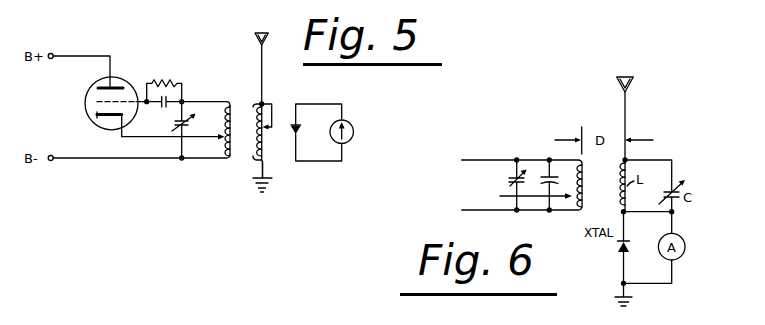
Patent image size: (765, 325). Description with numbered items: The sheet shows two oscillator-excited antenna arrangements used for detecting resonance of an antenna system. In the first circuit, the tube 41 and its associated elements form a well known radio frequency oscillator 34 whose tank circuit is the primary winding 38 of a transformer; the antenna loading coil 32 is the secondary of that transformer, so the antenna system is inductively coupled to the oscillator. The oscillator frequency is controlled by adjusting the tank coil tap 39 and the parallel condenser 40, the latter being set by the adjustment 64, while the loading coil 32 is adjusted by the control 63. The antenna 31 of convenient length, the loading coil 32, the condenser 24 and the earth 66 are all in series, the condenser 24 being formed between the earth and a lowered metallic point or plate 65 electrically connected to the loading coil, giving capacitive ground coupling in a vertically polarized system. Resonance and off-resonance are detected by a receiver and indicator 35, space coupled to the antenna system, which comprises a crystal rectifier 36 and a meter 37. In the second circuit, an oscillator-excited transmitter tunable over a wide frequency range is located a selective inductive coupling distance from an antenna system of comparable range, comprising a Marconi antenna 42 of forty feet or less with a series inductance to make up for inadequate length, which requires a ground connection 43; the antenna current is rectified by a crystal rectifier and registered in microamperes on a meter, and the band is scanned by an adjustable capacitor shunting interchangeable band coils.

In FIG. 5, the condenser 24 is at (272, 181).
In FIG. 5, the antenna 31 is at (262, 84).
In FIG. 5, the antenna loading coil 32 is at (253, 162).
In FIG. 5, the oscillator 34 is at (183, 80).
In FIG. 5, the receiver and indicator 35 is at (335, 121).
In FIG. 5, the crystal rectifier 36 is at (298, 130).
In FIG. 5, the meter 37 is at (351, 126).
In FIG. 5, the primary winding 38 is at (229, 109).
In FIG. 5, the tank coil tap 39 is at (214, 136).
In FIG. 5, the parallel condenser 40 is at (173, 120).
In FIG. 5, the tube 41 is at (86, 95).
In FIG. 6, the Marconi antenna 42 is at (627, 131).
In FIG. 6, the ground connection 43 is at (620, 293).
In FIG. 5, the control 63 is at (271, 126).
In FIG. 5, the adjustment 64 is at (170, 135).
In FIG. 5, the metallic point or plate 65 is at (273, 178).
In FIG. 5, the earth 66 is at (256, 191).